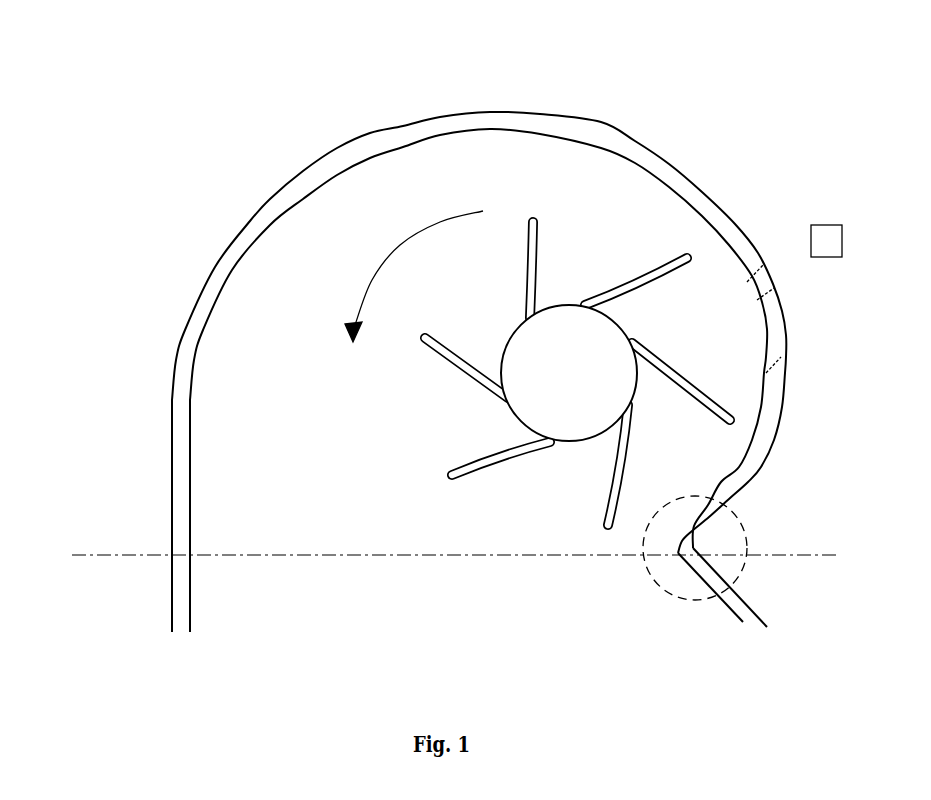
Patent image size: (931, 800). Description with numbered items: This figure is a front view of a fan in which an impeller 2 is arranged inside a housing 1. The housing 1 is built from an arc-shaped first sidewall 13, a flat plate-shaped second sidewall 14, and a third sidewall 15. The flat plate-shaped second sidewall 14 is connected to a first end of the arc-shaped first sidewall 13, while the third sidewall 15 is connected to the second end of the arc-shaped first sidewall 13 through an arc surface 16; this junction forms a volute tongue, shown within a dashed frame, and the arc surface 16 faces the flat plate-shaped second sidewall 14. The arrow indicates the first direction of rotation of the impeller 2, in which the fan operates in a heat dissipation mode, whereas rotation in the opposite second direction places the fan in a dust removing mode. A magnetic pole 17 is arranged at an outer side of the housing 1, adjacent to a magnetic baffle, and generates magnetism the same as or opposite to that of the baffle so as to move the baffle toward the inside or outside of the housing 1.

The housing 1 is at (417, 283).
The impeller 2 is at (496, 368).
The arc-shaped first sidewall 13 is at (478, 290).
The flat plate-shaped second sidewall 14 is at (124, 496).
The third sidewall 15 is at (754, 580).
The arc surface 16 is at (731, 536).
The magnetic pole 17 is at (807, 189).